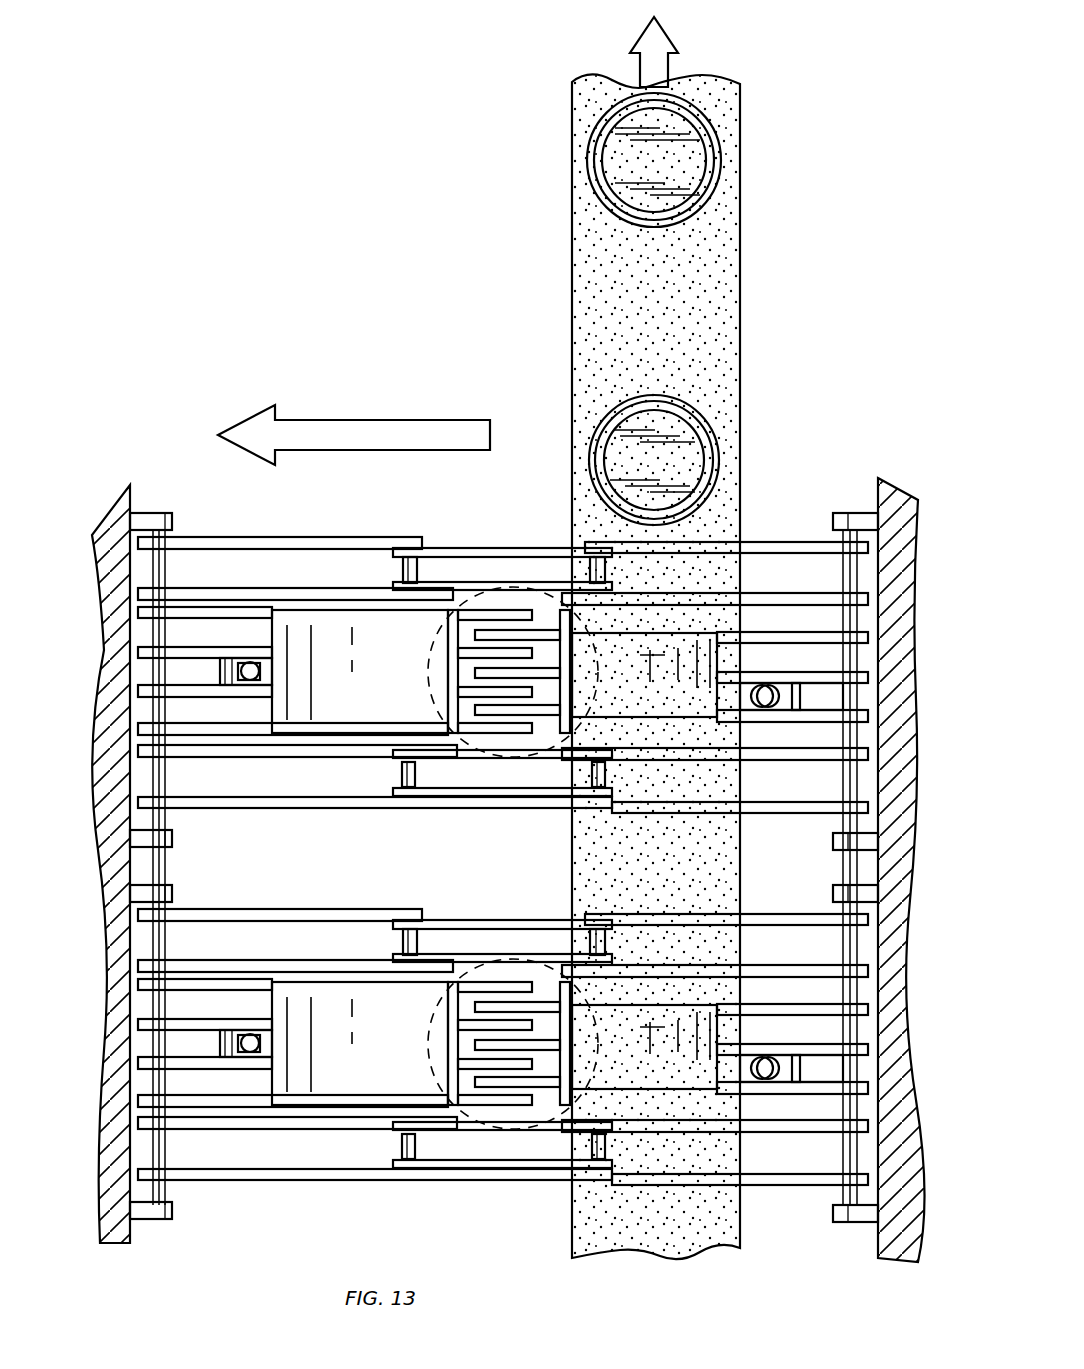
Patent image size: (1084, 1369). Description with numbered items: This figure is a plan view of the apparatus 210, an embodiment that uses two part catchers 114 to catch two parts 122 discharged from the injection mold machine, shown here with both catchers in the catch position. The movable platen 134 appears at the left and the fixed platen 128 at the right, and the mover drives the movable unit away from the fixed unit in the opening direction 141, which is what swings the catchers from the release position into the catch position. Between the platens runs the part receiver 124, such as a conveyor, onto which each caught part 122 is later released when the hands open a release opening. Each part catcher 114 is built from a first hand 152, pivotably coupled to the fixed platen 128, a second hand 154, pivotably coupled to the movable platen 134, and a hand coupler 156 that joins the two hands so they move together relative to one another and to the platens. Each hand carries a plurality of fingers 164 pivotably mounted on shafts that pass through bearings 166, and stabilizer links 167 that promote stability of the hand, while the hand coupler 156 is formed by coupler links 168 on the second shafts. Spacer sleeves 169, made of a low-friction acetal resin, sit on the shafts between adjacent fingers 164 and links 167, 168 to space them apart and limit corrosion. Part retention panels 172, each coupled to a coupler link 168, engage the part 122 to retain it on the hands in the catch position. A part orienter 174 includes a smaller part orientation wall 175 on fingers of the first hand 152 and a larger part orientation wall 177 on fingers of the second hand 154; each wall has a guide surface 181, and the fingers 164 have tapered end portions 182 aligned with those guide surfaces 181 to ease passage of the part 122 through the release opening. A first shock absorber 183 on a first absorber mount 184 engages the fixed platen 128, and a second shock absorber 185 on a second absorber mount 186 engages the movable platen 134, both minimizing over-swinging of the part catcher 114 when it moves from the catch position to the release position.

The part catcher 114 is at (528, 503).
The part 122 is at (692, 176).
The part receiver 124 is at (712, 298).
The fixed platen 128 is at (884, 505).
The movable platen 134 is at (112, 510).
The opening direction 141 is at (330, 445).
The first hand 152 is at (776, 506).
The second hand 154 is at (206, 500).
The hand coupler 156 is at (467, 521).
The fingers 164 is at (220, 640).
The bearings 166 is at (148, 515).
The stabilizer links 167 is at (298, 800).
The coupler links 168 is at (498, 548).
The spacer sleeves 169 is at (166, 568).
The part retention panels 172 is at (440, 548).
The part orienter 174 is at (638, 713).
The smaller part orientation wall 175 is at (655, 660).
The larger part orientation wall 177 is at (338, 642).
The guide surface 181 is at (625, 670).
The tapered end portions 182 is at (515, 672).
The first shock absorber 183 is at (775, 685).
The first absorber mount 184 is at (785, 705).
The second shock absorber 185 is at (260, 670).
The second absorber mount 186 is at (236, 660).
The apparatus 210 is at (404, 296).